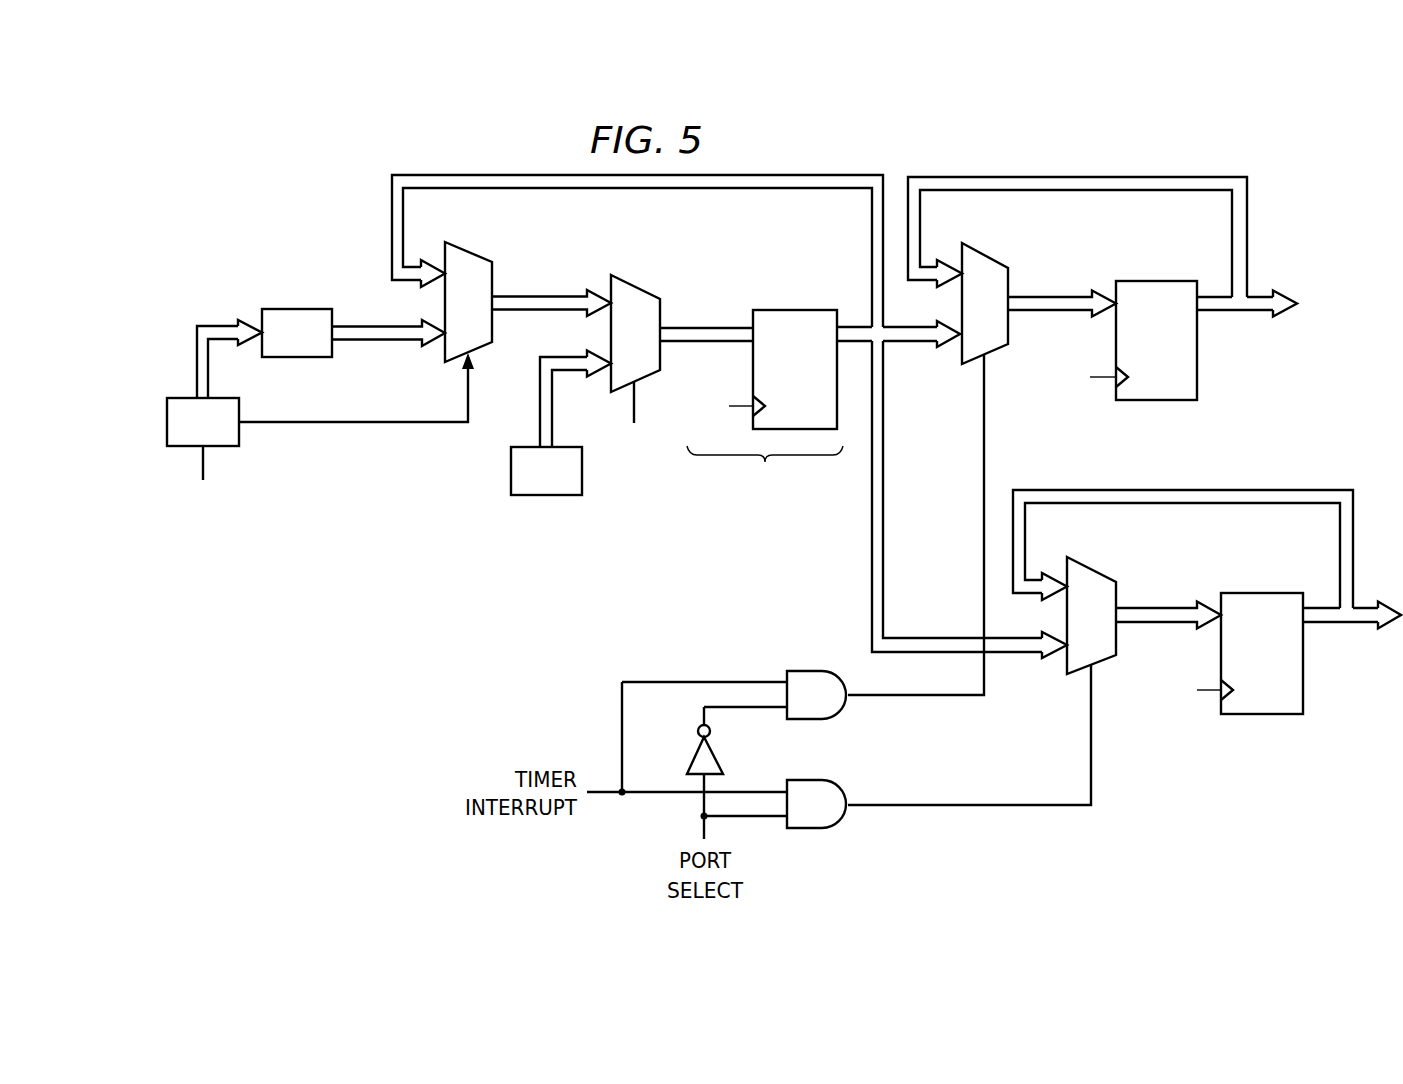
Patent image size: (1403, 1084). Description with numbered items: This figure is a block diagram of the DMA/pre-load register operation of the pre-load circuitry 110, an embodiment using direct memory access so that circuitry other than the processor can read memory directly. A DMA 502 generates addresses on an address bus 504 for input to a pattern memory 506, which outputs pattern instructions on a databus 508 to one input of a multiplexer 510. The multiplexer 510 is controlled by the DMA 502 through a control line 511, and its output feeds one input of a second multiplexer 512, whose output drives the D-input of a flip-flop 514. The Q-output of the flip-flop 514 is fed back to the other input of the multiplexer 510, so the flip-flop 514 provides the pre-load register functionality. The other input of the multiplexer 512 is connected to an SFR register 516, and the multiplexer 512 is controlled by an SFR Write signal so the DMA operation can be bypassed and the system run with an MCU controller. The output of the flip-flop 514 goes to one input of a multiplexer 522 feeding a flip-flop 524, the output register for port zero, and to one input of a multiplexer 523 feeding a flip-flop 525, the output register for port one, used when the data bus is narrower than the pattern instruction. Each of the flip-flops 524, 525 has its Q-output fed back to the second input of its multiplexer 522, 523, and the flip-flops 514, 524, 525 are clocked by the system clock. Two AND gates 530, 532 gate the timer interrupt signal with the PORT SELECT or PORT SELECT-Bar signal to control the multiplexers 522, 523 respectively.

The pre-load circuitry 110 is at (408, 638).
The DMA 502 is at (165, 431).
The address bus 504 is at (195, 368).
The pattern memory 506 is at (298, 308).
The databus 508 is at (372, 325).
The multiplexer 510 is at (480, 257).
The control line 511 is at (340, 423).
The second multiplexer 512 is at (643, 290).
The flip-flop 514 is at (795, 308).
The SFR register 516 is at (548, 498).
The multiplexer 522 is at (993, 258).
The multiplexer 523 is at (1102, 572).
The flip-flop 524 is at (1155, 278).
The flip-flop 525 is at (1262, 717).
The AND gate 530 is at (813, 668).
The AND gate 532 is at (810, 833).